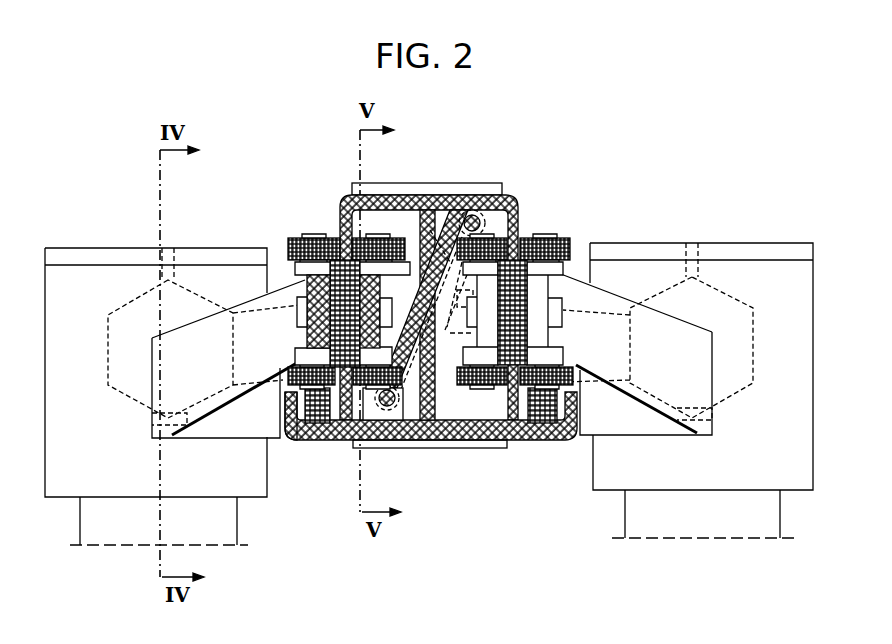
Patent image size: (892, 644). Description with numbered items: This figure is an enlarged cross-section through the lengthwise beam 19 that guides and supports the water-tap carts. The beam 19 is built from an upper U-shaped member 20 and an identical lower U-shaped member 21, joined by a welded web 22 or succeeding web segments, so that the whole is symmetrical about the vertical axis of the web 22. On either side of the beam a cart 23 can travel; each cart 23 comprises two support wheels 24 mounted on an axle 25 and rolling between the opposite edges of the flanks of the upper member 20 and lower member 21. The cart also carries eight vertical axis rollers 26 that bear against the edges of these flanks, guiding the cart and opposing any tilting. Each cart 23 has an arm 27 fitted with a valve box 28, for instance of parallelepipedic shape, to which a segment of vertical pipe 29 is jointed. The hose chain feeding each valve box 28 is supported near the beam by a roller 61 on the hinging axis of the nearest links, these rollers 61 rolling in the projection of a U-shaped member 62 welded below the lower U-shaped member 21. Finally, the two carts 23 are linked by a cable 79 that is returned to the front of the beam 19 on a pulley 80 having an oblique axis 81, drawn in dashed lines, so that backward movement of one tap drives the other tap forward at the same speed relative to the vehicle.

The lengthwise beam 19 is at (322, 447).
The upper U-shaped member 20 is at (450, 200).
The lower U-shaped member 21 is at (472, 441).
The welded web 22 is at (425, 232).
The cart 23 is at (305, 278).
The support wheels 24 is at (340, 330).
The axle 25 is at (298, 302).
The vertical axis rollers 26 is at (360, 246).
The arm 27 is at (248, 310).
The valve box 28 is at (110, 283).
The segment of vertical pipe 29 is at (212, 518).
The roller 61 is at (312, 438).
The U-shaped member 62 is at (442, 442).
The cable 79 is at (482, 216).
The pulley 80 is at (495, 250).
The oblique axis 81 is at (563, 333).